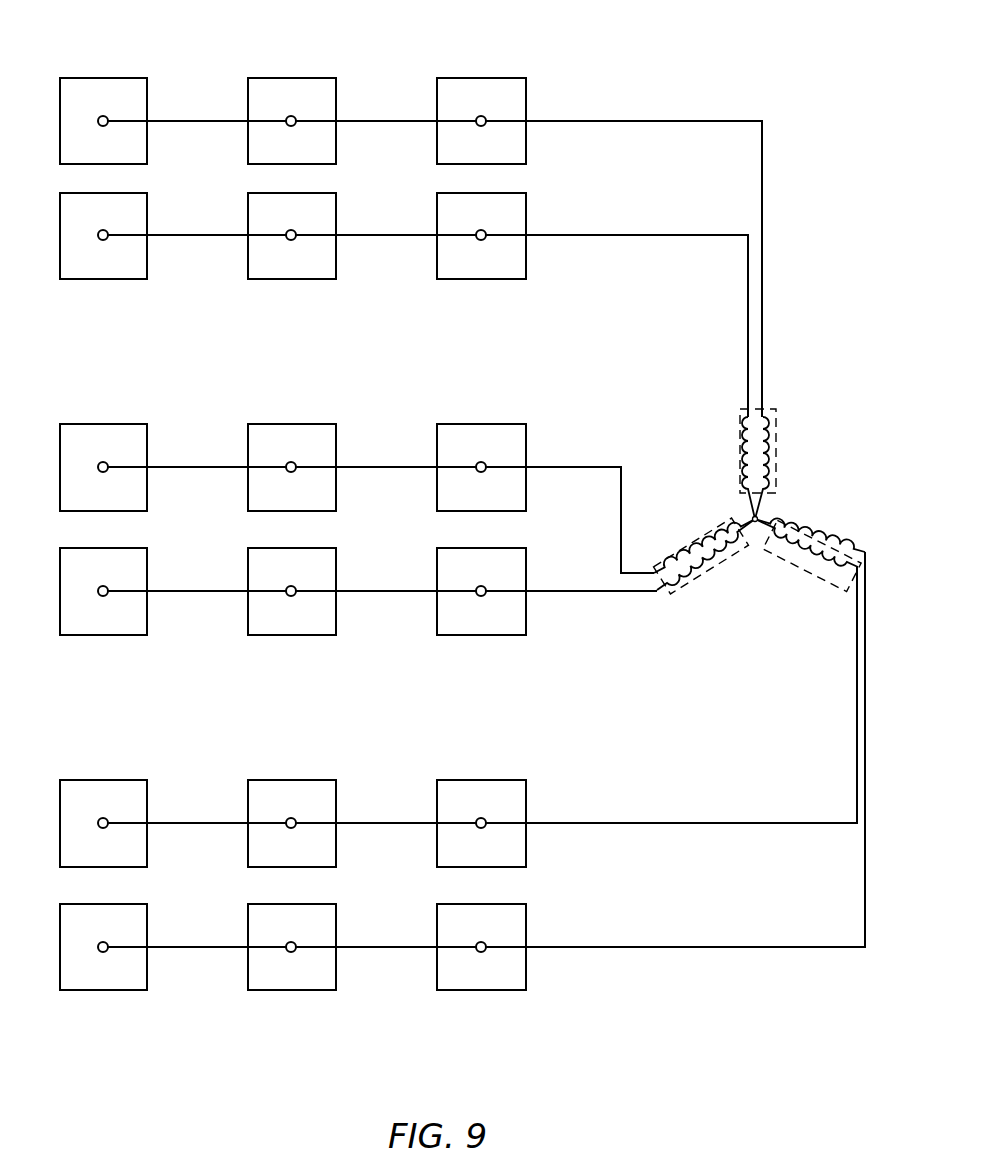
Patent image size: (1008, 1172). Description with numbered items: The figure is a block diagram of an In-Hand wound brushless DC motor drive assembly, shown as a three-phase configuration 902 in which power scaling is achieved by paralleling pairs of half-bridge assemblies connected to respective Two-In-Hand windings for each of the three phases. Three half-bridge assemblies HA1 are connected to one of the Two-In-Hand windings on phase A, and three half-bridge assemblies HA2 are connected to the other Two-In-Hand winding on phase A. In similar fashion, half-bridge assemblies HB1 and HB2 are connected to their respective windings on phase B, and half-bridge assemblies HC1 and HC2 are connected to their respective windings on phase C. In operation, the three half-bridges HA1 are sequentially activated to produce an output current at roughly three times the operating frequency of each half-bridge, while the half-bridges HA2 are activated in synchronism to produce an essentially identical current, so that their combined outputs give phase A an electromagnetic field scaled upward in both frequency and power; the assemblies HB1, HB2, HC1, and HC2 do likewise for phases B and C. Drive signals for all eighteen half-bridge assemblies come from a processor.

The three-phase configuration 902 is at (812, 396).
The half-bridge assemblies HA1 is at (487, 78).
The half-bridge assemblies HA2 is at (487, 279).
The half-bridge assemblies HB1 is at (487, 424).
The half-bridge assemblies HB2 is at (487, 635).
The half-bridge assemblies HC1 is at (487, 780).
The half-bridge assemblies HC2 is at (487, 990).